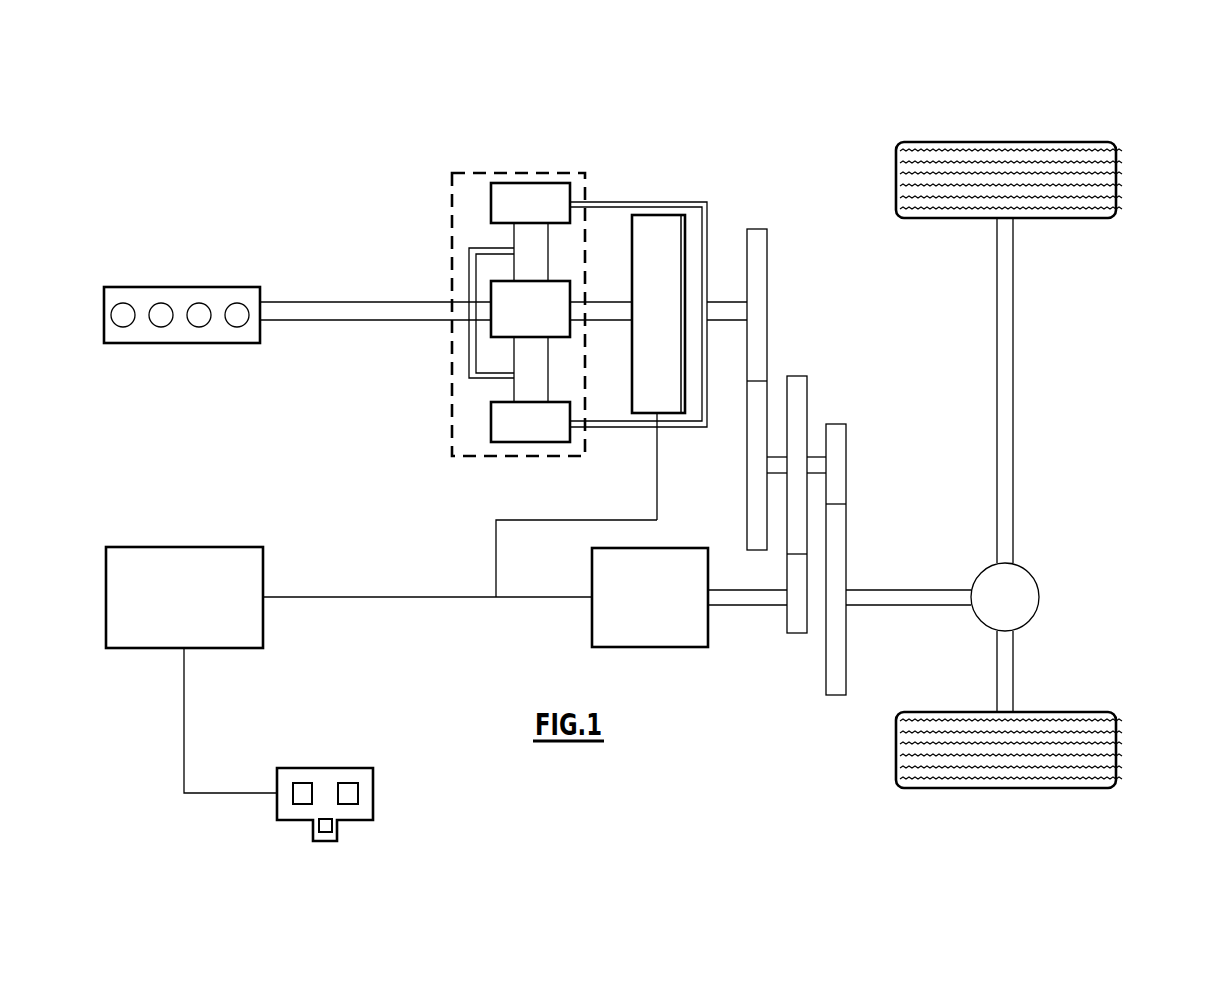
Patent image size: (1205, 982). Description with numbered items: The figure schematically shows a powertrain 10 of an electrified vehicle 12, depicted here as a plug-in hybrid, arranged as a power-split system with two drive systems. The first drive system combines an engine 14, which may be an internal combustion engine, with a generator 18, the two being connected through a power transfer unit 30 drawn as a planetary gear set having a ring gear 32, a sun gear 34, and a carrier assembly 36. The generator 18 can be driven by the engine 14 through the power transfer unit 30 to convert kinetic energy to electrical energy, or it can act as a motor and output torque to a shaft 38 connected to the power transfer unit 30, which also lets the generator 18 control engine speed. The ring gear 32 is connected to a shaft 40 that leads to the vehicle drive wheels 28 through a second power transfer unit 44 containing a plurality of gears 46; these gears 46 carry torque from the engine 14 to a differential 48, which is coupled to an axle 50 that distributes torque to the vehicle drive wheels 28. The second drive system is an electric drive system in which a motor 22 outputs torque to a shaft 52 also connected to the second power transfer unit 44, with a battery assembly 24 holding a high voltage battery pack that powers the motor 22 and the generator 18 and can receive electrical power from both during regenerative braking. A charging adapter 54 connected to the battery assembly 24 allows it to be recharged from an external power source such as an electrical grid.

The powertrain 10 is at (318, 206).
The electrified vehicle 12 is at (675, 138).
The engine 14 is at (119, 287).
The generator 18 is at (650, 215).
The motor 22 is at (710, 632).
The battery assembly 24 is at (120, 547).
The vehicle drive wheels 28 is at (995, 142).
The power transfer unit 30 is at (452, 420).
The ring gear 32 is at (491, 201).
The sun gear 34 is at (491, 287).
The carrier assembly 36 is at (469, 362).
The shaft 38 is at (593, 302).
The shaft 40 is at (733, 302).
The second power transfer unit 44 is at (825, 347).
The gears 46 is at (767, 348).
The differential 48 is at (1031, 617).
The axle 50 is at (1013, 380).
The shaft 52 is at (757, 606).
The charging adapter 54 is at (373, 783).